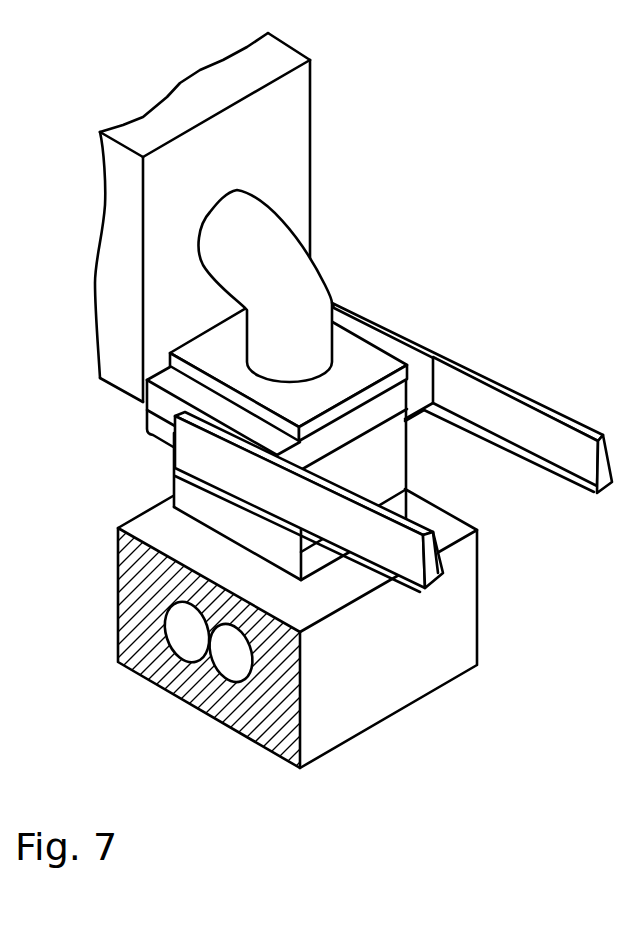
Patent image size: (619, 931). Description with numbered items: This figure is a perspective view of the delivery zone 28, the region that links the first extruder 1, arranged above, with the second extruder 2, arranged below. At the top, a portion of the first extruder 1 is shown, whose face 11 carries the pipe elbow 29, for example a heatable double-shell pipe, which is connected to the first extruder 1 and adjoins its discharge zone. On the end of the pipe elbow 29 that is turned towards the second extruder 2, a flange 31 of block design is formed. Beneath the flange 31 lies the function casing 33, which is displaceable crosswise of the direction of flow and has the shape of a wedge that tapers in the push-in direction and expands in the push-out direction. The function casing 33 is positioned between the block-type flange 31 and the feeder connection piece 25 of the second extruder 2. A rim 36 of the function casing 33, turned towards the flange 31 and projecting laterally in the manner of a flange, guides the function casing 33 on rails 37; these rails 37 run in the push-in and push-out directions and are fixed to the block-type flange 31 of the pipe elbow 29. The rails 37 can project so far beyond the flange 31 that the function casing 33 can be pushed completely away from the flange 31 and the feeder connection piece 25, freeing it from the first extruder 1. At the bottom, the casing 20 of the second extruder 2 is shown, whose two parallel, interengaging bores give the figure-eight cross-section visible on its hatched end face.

The first extruder 1 is at (269, 217).
The front face of component 11 is at (296, 182).
The pipe elbow 29 is at (238, 244).
The flange 31 is at (217, 335).
The rim 36 is at (157, 428).
The rails 37 is at (540, 437).
The delivery zone 28 is at (315, 418).
The feeder connection piece 25 is at (297, 472).
The function casing 33 is at (424, 474).
The casing 20 is at (193, 585).
The second extruder 2 is at (297, 638).